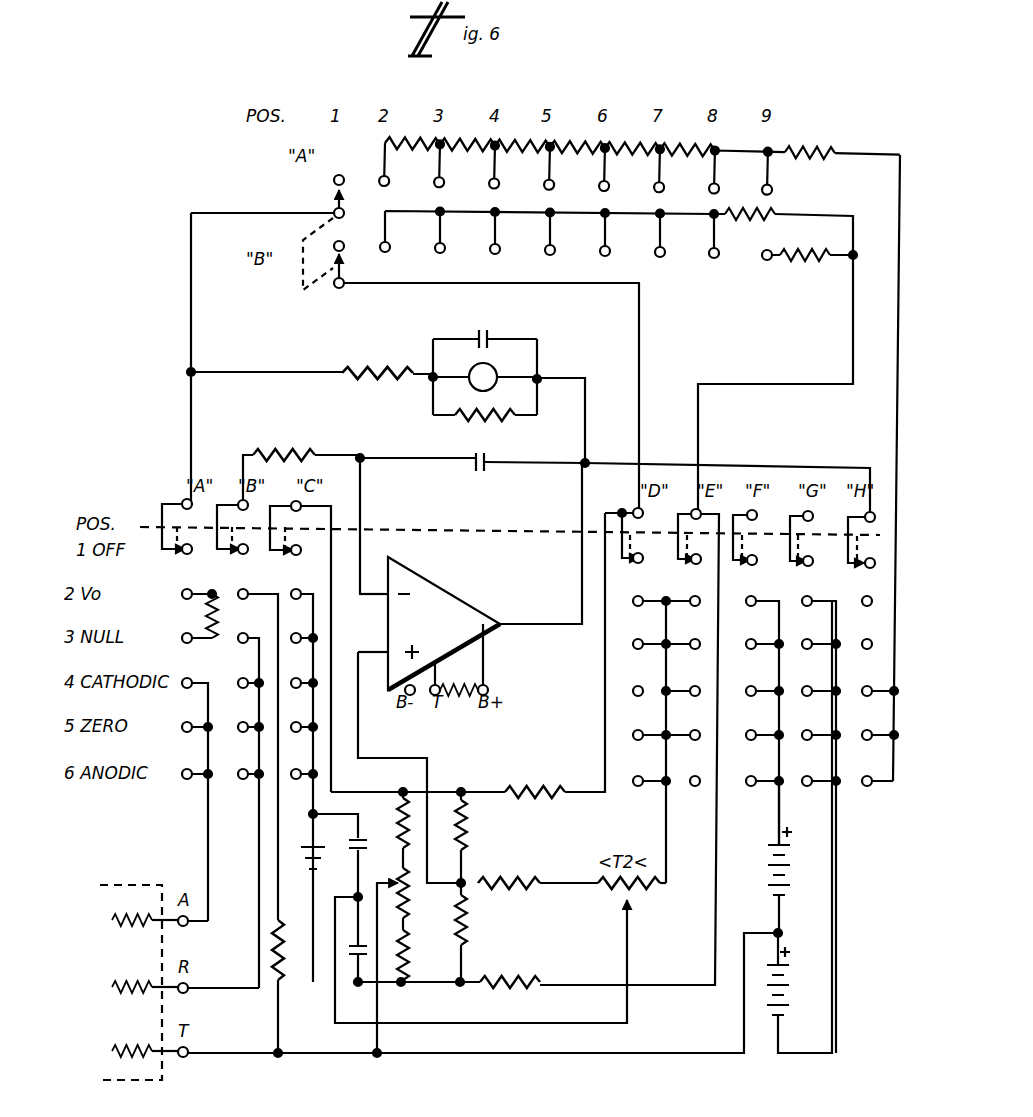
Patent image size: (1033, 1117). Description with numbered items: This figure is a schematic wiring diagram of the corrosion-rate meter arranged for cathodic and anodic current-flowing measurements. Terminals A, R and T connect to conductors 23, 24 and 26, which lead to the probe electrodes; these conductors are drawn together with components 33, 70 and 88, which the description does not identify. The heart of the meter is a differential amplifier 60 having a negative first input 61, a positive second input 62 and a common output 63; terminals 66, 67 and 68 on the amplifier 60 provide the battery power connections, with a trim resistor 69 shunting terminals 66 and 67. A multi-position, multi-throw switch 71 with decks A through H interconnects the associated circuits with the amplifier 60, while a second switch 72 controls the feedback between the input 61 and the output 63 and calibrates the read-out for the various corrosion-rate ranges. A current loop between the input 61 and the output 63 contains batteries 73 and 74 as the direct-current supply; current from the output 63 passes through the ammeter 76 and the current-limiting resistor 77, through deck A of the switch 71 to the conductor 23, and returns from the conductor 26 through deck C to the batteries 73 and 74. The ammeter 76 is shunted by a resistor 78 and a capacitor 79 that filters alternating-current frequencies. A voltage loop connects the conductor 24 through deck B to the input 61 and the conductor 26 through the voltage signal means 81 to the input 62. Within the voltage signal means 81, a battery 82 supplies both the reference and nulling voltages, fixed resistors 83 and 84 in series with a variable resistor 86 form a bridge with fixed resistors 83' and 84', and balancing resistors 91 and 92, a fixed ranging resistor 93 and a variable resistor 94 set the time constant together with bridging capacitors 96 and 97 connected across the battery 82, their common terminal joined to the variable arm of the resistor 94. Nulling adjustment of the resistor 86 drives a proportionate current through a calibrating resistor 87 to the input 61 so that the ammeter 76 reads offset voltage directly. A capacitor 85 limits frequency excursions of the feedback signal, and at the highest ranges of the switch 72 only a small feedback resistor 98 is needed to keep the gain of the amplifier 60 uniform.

The conductor 23 is at (132, 926).
The conductor 24 is at (133, 990).
The conductor 26 is at (106, 1055).
The electrode assembly 33 is at (130, 885).
The differential amplifier 60 is at (440, 588).
The first input 61 is at (378, 594).
The second input 62 is at (366, 652).
The common output 63 is at (506, 624).
The terminal 66 is at (490, 692).
The terminal 67 is at (432, 697).
The terminal 68 is at (404, 694).
The trim resistor 69 is at (480, 698).
The null potentiometer 70 is at (222, 618).
The multi-position, multi-throw switch 71 is at (160, 500).
The second multi-position, multi-throw switch 72 is at (326, 200).
The battery 73 is at (788, 888).
The battery 74 is at (792, 996).
The ammeter 76 is at (496, 368).
The resistor 77 is at (368, 365).
The resistor 78 is at (508, 420).
The capacitor 79 is at (492, 332).
The voltage signal means 81 is at (569, 853).
The battery 82 is at (297, 870).
The fixed resistor 83 is at (390, 816).
The fixed resistor 83' is at (484, 843).
The fixed resistor 84 is at (388, 956).
The fixed resistor 84' is at (483, 938).
The capacitor 85 is at (484, 472).
The variable resistor 86 is at (406, 884).
The calibrating resistor 87 is at (268, 456).
The reference resistor 88 is at (282, 968).
The balancing resistor 91 is at (518, 790).
The balancing resistor 92 is at (525, 980).
The fixed ranging resistor 93 is at (498, 890).
The variable resistor 94 is at (642, 890).
The bridging capacitor 96 is at (752, 214).
The bridging capacitor 97 is at (796, 262).
The resistor 98 is at (805, 150).